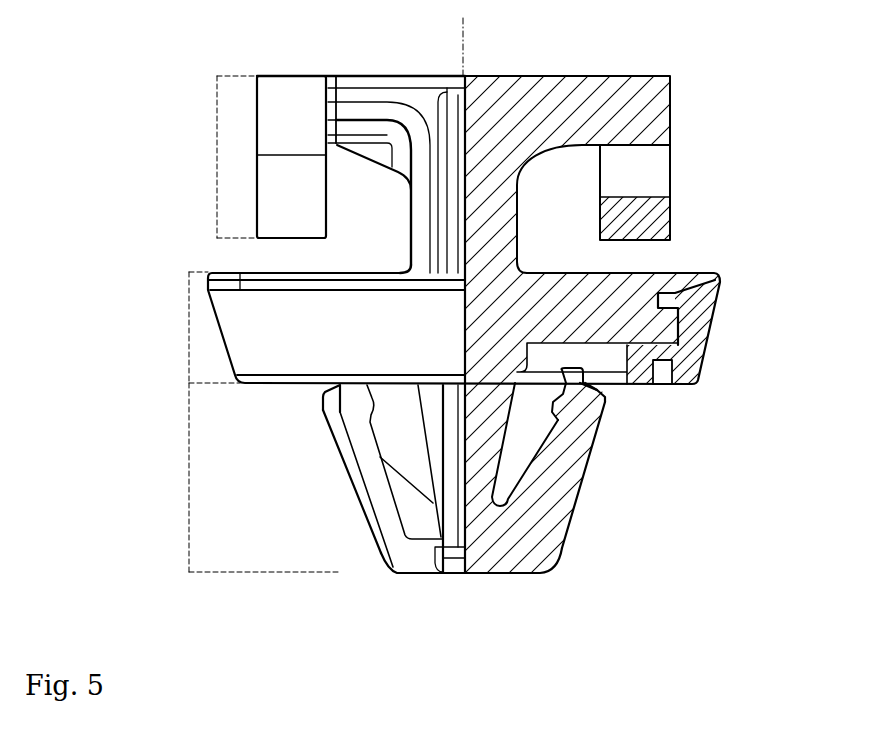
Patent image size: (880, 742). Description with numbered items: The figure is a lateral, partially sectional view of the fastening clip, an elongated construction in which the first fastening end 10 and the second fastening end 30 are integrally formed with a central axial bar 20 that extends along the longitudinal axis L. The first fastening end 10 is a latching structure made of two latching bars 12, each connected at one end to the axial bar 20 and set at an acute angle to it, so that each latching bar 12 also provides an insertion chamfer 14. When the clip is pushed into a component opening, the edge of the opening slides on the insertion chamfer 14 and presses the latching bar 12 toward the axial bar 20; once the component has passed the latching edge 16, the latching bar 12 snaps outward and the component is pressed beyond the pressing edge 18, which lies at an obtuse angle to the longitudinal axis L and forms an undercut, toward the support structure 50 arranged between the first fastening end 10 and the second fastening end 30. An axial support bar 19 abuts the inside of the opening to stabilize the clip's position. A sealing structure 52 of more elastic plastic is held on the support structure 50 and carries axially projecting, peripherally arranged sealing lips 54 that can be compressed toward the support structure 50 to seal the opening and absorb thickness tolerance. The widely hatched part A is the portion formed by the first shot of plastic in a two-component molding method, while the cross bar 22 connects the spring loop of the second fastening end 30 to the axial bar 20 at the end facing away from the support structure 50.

The first fastening end 10 is at (189, 480).
The latching bar 12 is at (360, 480).
The insertion chamfer 14 is at (363, 520).
The latching edge 16 is at (323, 402).
The pressing edge 18 is at (607, 395).
The axial support bar 19 is at (557, 393).
The axial bar 20 is at (517, 251).
The cross bar 22 is at (353, 75).
The second fastening end 30 is at (217, 164).
The support structure 50 is at (189, 331).
The sealing structure 52 is at (713, 318).
The sealing lip 54 is at (700, 371).
The widely hatched part A is at (620, 88).
The longitudinal axis L is at (463, 38).